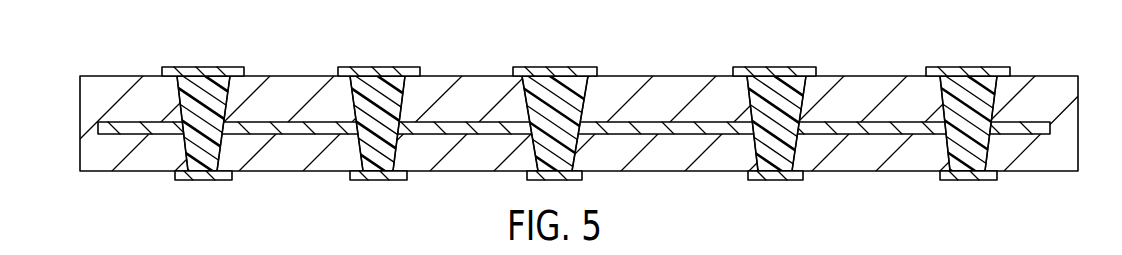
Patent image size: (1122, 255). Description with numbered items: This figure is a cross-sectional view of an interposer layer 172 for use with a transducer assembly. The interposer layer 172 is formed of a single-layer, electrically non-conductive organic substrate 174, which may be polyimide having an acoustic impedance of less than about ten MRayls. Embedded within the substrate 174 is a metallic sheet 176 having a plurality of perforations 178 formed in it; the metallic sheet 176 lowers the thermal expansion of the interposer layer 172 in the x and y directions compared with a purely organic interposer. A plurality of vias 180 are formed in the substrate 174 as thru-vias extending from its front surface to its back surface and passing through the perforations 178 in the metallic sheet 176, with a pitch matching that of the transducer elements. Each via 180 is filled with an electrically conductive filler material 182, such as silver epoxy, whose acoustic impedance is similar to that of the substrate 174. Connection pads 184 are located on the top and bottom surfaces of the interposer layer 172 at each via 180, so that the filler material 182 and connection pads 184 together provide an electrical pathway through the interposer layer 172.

The interposer layer 172 is at (903, 33).
The electrically non-conductive organic substrate 174 is at (102, 76).
The metallic sheet 176 is at (110, 133).
The perforations 178 is at (350, 137).
The vias 180 is at (348, 96).
The electrically conductive filler material 182 is at (535, 98).
The connection pads 184 is at (205, 179).